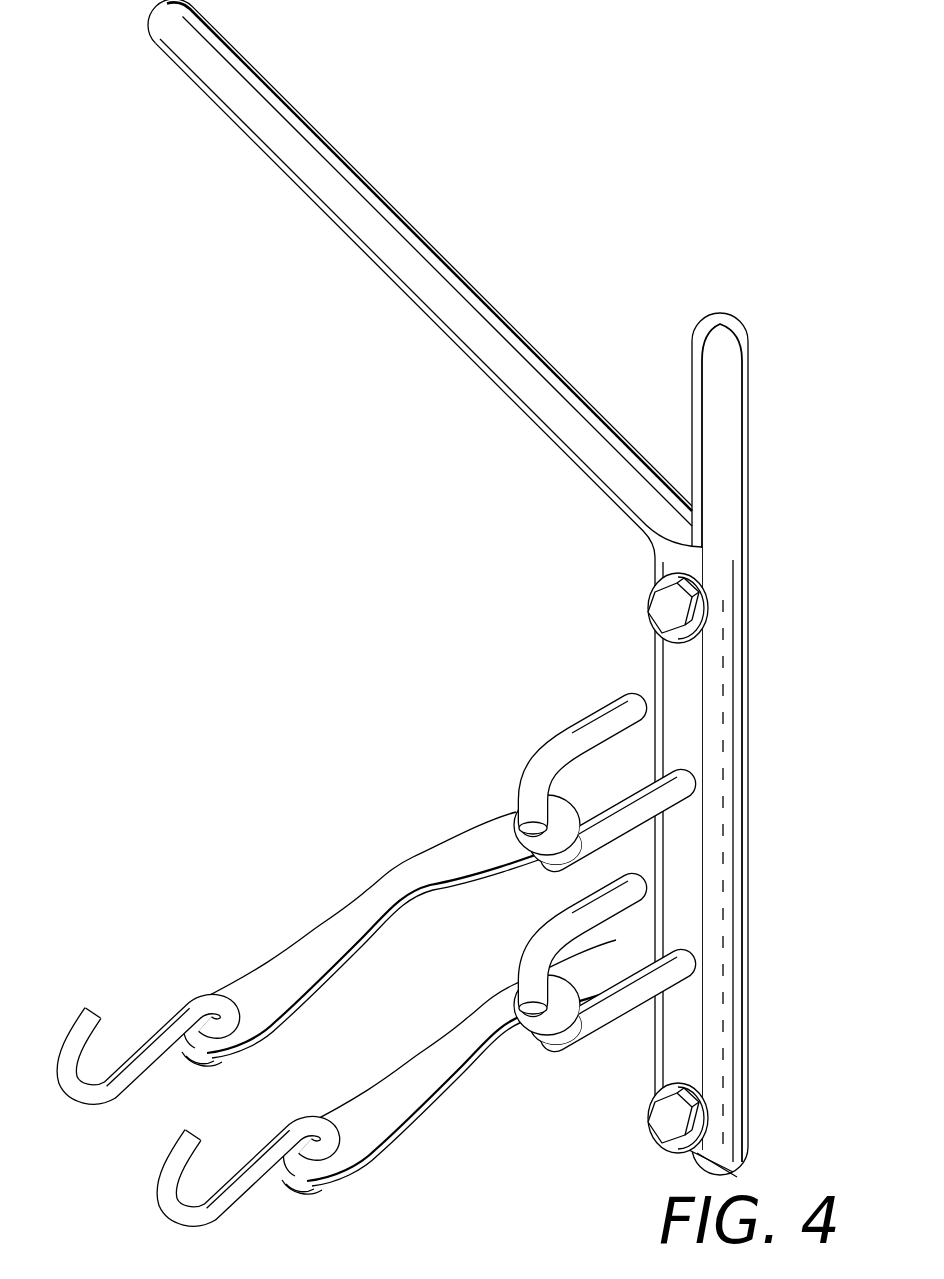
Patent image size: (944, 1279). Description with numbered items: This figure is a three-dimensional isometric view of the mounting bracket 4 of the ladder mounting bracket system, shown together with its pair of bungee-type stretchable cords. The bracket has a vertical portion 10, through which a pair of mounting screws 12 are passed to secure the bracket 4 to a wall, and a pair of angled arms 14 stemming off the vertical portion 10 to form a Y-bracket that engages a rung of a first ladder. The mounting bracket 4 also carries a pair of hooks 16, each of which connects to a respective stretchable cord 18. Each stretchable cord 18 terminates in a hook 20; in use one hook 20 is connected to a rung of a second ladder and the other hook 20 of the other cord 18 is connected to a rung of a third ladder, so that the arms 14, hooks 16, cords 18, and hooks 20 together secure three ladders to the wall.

The mounting bracket 4 is at (696, 144).
The vertical portion 10 is at (750, 795).
The mounting screws 12 is at (692, 603).
The angled arms 14 is at (697, 323).
The hooks 16 is at (547, 930).
The stretchable cord 18 is at (328, 970).
The hook 20 is at (173, 1146).